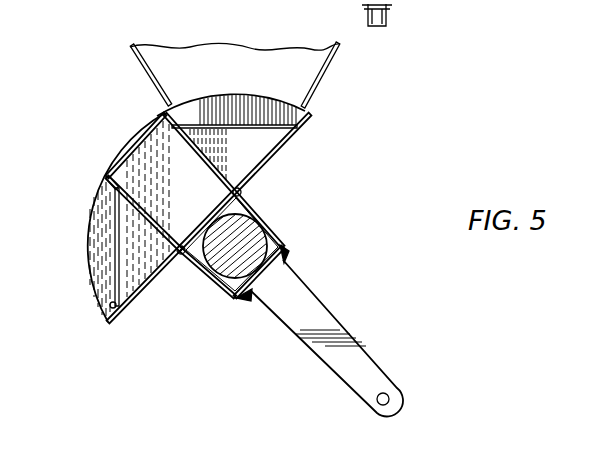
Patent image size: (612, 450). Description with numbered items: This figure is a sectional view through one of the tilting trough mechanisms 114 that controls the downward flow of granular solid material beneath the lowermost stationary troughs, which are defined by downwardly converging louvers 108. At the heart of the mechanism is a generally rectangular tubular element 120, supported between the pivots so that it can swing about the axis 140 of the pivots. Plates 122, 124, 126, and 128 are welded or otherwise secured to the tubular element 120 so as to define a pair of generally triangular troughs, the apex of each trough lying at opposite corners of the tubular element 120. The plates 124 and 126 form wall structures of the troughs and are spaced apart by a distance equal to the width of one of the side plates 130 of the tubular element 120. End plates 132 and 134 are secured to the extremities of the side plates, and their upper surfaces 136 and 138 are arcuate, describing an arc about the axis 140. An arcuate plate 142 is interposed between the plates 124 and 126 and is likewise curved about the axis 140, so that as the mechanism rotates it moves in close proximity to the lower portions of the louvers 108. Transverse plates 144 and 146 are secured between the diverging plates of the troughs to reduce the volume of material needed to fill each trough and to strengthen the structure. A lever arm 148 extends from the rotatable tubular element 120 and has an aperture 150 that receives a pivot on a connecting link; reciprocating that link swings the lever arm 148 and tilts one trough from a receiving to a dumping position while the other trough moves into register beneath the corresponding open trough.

The louvers 108 is at (143, 64).
The tilting trough mechanism 114 is at (308, 132).
The rectangular tubular element 120 is at (256, 214).
The plate 122 is at (147, 286).
The plate 124 is at (132, 205).
The plate 126 is at (162, 117).
The plate 128 is at (274, 150).
The side plate 130 is at (207, 217).
The end plate 132 is at (307, 93).
The end plate 134 is at (102, 293).
The upper surface of end plate 136 is at (283, 113).
The upper surface of end plate 138 is at (98, 190).
The axis of the pivots 140 is at (286, 248).
The arcuate plate 142 is at (123, 148).
The transverse plate 144 is at (116, 250).
The transverse plate 146 is at (206, 118).
The lever arm 148 is at (303, 302).
The aperture 150 is at (390, 392).